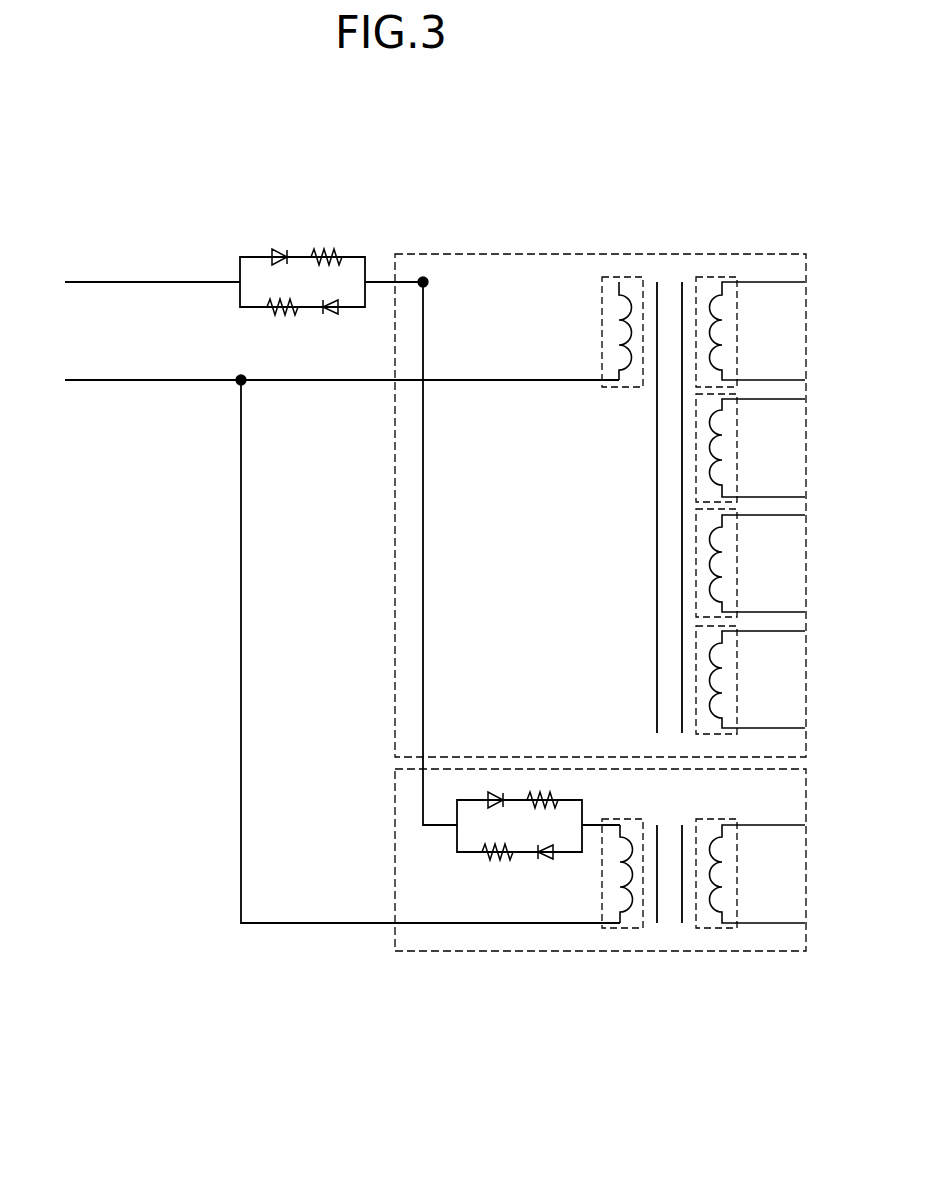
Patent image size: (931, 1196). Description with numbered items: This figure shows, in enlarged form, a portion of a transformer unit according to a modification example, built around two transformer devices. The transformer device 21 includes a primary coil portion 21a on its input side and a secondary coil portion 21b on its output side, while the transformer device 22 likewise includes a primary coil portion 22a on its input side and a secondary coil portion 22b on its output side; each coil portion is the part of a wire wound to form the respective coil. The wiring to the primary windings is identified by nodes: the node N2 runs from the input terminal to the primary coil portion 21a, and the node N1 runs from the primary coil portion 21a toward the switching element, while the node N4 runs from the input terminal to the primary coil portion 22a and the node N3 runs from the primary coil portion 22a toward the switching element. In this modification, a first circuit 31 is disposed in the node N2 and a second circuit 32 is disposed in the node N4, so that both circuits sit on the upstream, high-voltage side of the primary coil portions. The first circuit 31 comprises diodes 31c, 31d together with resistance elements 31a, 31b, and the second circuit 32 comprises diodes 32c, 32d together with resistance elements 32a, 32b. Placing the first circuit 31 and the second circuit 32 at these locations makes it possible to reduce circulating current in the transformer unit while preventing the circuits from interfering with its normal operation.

The transformer device 21 is at (600, 467).
The primary coil portion 21a is at (619, 276).
The secondary coil portion 21b is at (716, 276).
The transformer device 22 is at (600, 901).
The primary coil portion 22a is at (621, 930).
The secondary coil portion 22b is at (716, 930).
The first circuit 31 is at (286, 261).
The resistance element 31a is at (273, 317).
The resistance element 31b is at (338, 249).
The diode 31c is at (272, 249).
The diode 31d is at (339, 317).
The second circuit 32 is at (521, 808).
The resistance element 32a is at (487, 859).
The resistance element 32b is at (554, 793).
The diode 32c is at (488, 793).
The diode 32d is at (554, 859).
The node N1 is at (305, 383).
The node N2 is at (161, 280).
The node N3 is at (318, 926).
The node N4 is at (442, 828).